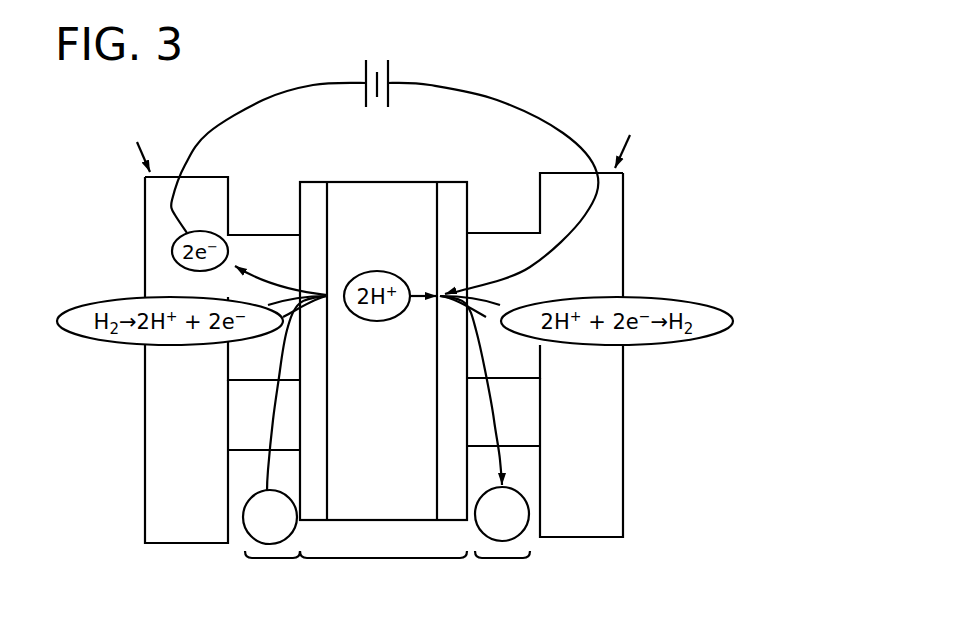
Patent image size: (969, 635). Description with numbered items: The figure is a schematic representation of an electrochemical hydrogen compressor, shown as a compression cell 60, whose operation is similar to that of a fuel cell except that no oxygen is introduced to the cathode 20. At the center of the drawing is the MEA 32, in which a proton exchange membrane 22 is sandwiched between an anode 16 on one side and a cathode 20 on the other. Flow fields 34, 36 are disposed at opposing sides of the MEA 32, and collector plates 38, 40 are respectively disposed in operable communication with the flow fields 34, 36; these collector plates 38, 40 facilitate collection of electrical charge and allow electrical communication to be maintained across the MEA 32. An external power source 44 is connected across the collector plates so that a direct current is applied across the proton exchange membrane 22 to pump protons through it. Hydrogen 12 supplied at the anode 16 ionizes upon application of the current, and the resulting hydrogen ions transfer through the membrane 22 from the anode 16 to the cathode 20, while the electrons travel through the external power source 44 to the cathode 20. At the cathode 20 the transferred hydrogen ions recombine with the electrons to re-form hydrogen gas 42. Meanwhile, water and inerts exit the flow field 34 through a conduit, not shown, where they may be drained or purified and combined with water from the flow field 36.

The hydrogen 12 is at (264, 493).
The anode 16 is at (313, 178).
The cathode 20 is at (455, 178).
The proton exchange membrane 22 is at (400, 178).
The MEA 32 is at (387, 572).
The flow field 34 is at (275, 560).
The flow field 36 is at (503, 560).
The collector plate 38 is at (185, 543).
The collector plate 40 is at (623, 505).
The hydrogen gas 42 is at (512, 494).
The external power source 44 is at (376, 53).
The compression cell 60 is at (642, 78).